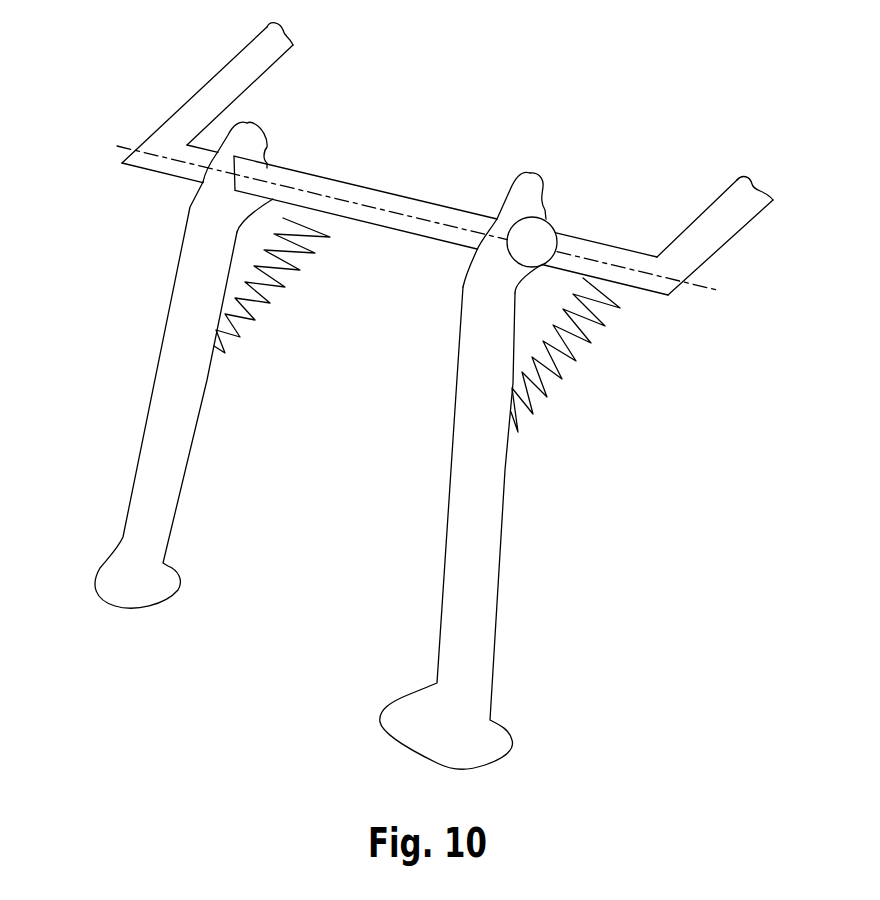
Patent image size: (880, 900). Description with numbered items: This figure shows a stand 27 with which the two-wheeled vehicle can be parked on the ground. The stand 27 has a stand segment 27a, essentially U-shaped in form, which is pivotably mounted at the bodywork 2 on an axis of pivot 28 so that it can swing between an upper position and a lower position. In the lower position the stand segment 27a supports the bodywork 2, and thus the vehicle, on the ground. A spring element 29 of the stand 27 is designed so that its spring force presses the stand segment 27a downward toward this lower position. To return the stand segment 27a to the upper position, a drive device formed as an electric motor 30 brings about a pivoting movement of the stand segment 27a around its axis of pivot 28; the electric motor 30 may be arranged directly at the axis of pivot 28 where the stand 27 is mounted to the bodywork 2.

The bodywork 2 is at (722, 222).
The axis of pivot 28 is at (152, 147).
The stand 27 is at (154, 267).
The stand segment 27a is at (177, 399).
The spring element 29 is at (278, 296).
The electric motor 30 is at (543, 237).